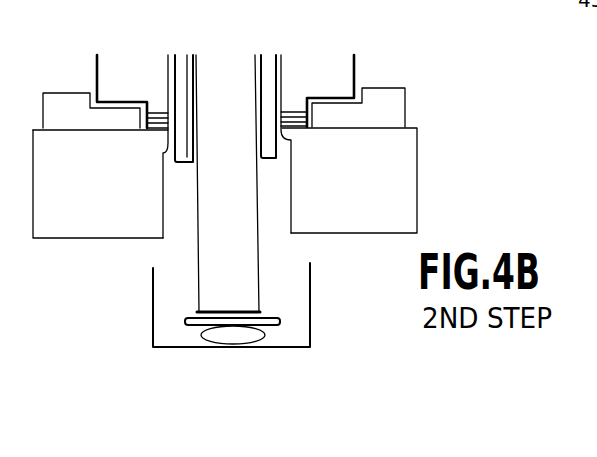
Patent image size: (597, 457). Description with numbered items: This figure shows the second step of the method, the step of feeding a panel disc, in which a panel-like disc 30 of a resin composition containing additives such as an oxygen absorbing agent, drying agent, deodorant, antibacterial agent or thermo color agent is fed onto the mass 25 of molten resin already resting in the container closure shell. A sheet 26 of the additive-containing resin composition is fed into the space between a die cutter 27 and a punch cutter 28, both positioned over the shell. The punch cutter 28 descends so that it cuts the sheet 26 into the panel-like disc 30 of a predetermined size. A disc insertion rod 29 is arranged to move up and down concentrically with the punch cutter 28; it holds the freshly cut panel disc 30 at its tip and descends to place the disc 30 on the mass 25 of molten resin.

The mass of molten resin 25 is at (243, 333).
The sheet of additive-containing resin composition 26 is at (308, 127).
The die cutter 27 is at (288, 130).
The punch cutter 28 is at (280, 162).
The disc insertion rod 29 is at (243, 258).
The panel-like disc 30 is at (280, 325).